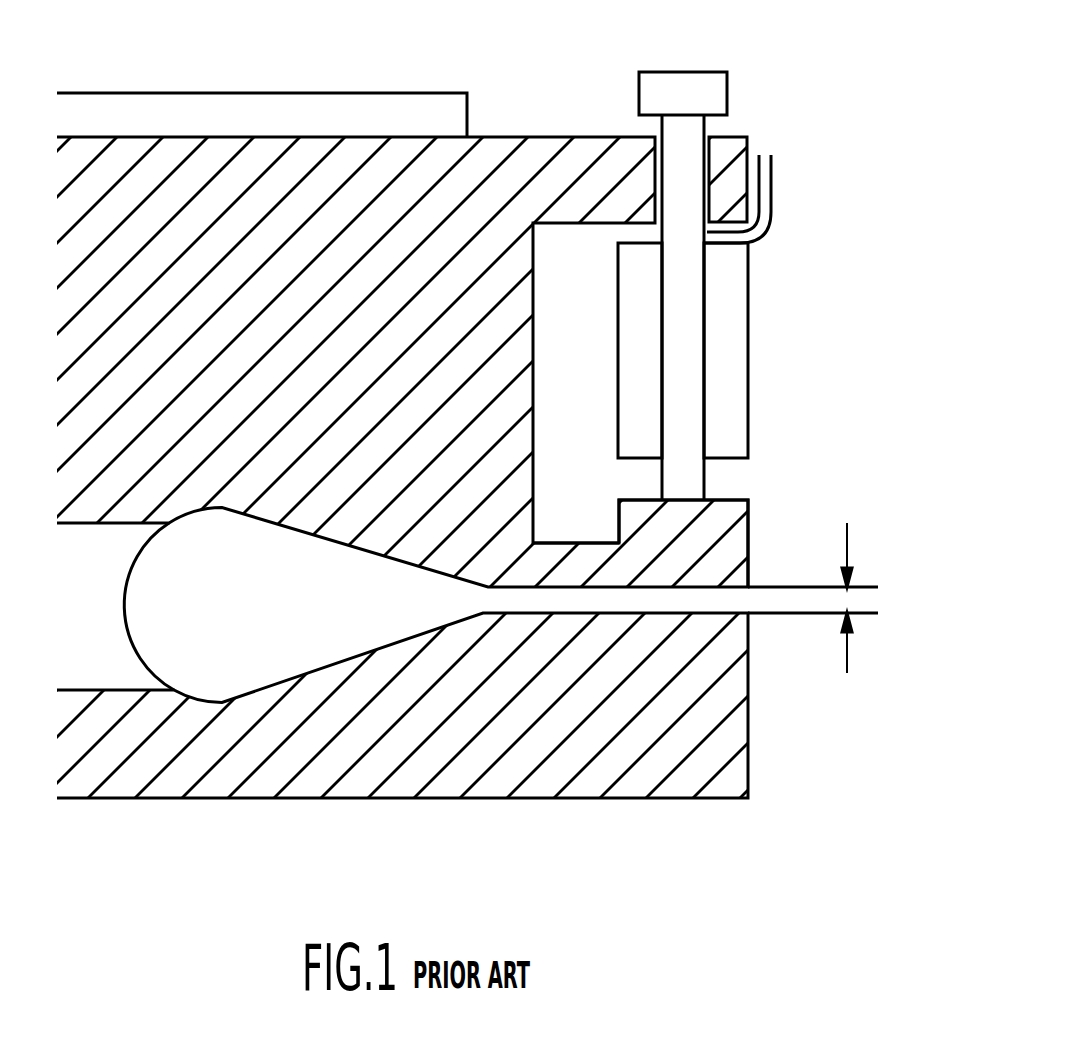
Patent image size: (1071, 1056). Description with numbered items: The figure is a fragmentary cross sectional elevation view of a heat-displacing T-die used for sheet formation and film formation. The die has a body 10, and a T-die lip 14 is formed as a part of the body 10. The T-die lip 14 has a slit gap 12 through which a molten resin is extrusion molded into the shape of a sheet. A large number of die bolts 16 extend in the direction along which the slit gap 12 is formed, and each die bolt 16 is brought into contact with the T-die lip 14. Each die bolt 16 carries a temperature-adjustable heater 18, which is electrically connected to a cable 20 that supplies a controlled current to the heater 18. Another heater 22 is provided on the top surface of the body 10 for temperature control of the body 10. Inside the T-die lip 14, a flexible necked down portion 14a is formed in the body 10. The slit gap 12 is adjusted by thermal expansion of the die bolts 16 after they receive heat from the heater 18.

The body 10 is at (231, 189).
The heater 22 is at (337, 93).
The die bolt 16 is at (727, 87).
The cable 20 is at (775, 187).
The temperature-adjustable heater 18 is at (749, 322).
The flexible necked down portion 14a is at (570, 543).
The T-die lip 14 is at (749, 522).
The slit gap 12 is at (847, 672).